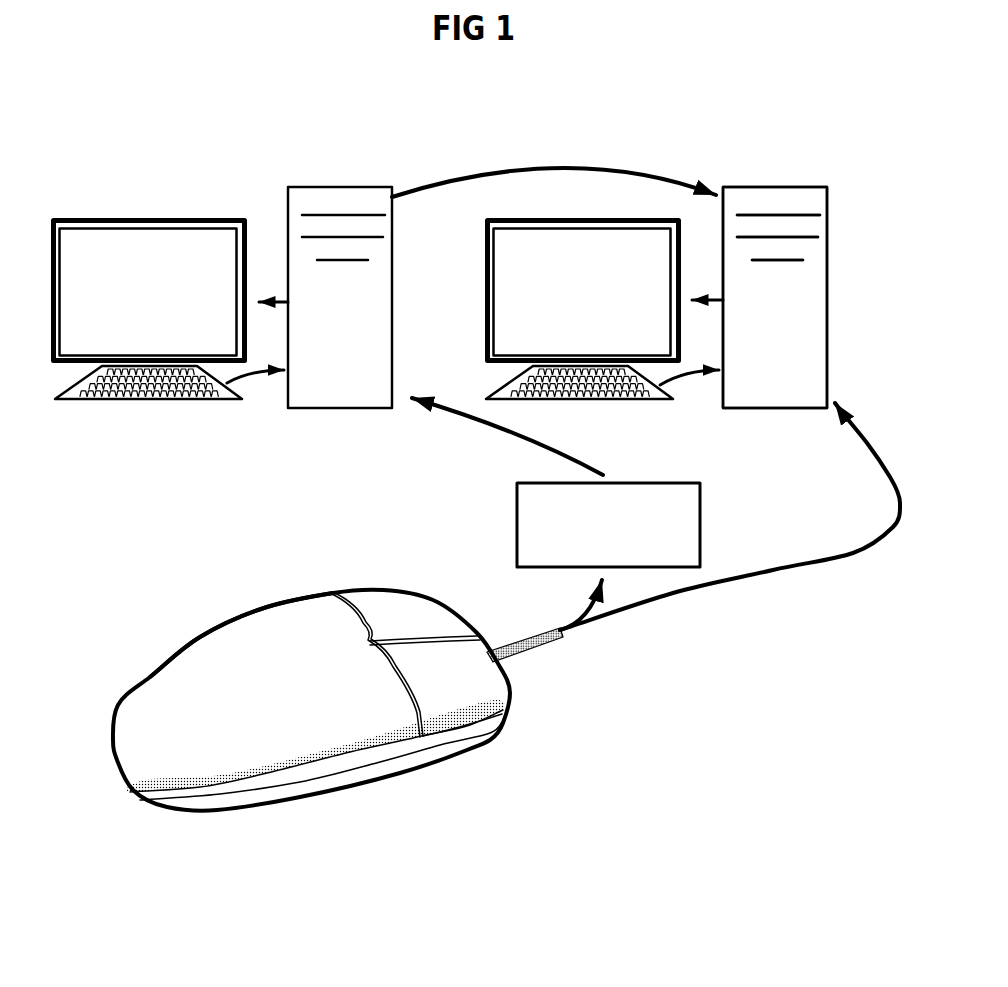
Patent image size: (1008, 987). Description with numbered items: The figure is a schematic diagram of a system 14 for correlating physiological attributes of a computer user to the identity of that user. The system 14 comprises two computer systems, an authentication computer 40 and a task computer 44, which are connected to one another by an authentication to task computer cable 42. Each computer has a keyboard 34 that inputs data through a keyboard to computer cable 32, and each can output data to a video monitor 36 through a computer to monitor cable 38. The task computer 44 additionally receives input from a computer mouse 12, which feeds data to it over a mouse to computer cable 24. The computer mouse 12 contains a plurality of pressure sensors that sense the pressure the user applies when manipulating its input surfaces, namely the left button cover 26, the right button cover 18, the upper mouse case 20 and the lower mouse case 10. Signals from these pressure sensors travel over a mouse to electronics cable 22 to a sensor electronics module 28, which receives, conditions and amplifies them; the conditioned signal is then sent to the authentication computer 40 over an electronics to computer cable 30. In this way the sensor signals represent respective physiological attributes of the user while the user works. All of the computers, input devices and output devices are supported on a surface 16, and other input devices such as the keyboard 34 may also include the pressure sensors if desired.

The lower mouse case 10 is at (360, 763).
The computer mouse 12 is at (500, 758).
The system 14 is at (762, 716).
The surface 16 is at (664, 747).
The right button cover 18 is at (465, 675).
The upper mouse case 20 is at (243, 623).
The mouse to electronics cable 22 is at (577, 602).
The mouse to computer cable 24 is at (827, 552).
The left button cover 26 is at (407, 607).
The sensor electronics module 28 is at (687, 512).
The electronics to computer cable 30 is at (503, 427).
The keyboard to computer cable 32 is at (258, 383).
The keyboard 34 is at (190, 393).
The video monitor 36 is at (200, 237).
The computer to monitor cable 38 is at (270, 285).
The authentication computer 40 is at (377, 197).
The authentication to task computer cable 42 is at (483, 173).
The task computer 44 is at (800, 192).